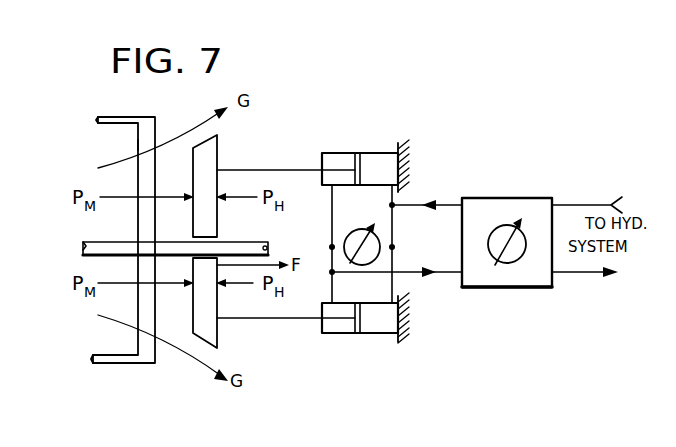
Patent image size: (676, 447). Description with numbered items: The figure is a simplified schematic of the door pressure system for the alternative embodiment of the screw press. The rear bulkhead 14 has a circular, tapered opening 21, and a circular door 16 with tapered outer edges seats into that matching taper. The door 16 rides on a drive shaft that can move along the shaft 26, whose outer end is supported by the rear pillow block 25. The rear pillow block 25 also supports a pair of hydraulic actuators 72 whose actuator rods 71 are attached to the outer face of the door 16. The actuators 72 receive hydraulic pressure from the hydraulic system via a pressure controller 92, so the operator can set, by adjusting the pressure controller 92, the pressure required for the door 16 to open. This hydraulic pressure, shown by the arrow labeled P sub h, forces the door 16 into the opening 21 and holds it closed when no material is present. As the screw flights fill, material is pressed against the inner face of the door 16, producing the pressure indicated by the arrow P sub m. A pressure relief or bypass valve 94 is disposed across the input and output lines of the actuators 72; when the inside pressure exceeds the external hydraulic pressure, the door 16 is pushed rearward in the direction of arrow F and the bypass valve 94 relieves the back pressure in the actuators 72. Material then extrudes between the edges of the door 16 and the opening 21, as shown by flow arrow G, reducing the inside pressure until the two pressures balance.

The rear bulkhead 14 is at (150, 128).
The circular opening 21 is at (150, 146).
The circular door 16 is at (208, 157).
The shaft 26 is at (250, 241).
The actuator rods 71 is at (296, 170).
The hydraulic actuators 72 is at (372, 152).
The rear pillow block 25 is at (410, 162).
The pressure relief or bypass valve 94 is at (356, 229).
The pressure controller 92 is at (503, 207).